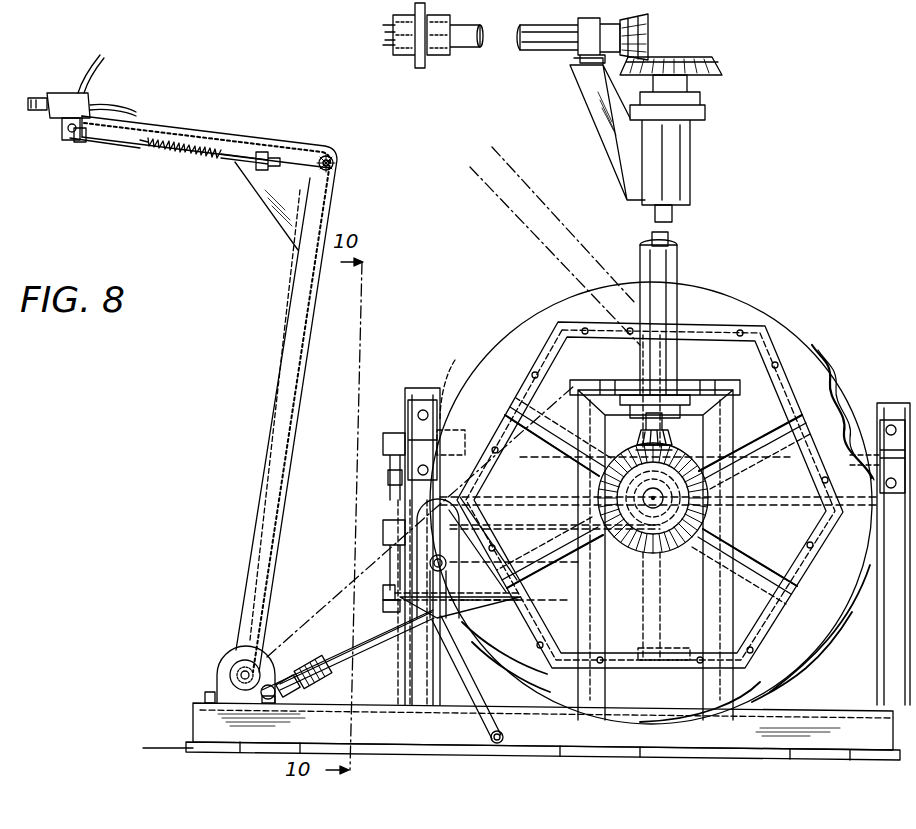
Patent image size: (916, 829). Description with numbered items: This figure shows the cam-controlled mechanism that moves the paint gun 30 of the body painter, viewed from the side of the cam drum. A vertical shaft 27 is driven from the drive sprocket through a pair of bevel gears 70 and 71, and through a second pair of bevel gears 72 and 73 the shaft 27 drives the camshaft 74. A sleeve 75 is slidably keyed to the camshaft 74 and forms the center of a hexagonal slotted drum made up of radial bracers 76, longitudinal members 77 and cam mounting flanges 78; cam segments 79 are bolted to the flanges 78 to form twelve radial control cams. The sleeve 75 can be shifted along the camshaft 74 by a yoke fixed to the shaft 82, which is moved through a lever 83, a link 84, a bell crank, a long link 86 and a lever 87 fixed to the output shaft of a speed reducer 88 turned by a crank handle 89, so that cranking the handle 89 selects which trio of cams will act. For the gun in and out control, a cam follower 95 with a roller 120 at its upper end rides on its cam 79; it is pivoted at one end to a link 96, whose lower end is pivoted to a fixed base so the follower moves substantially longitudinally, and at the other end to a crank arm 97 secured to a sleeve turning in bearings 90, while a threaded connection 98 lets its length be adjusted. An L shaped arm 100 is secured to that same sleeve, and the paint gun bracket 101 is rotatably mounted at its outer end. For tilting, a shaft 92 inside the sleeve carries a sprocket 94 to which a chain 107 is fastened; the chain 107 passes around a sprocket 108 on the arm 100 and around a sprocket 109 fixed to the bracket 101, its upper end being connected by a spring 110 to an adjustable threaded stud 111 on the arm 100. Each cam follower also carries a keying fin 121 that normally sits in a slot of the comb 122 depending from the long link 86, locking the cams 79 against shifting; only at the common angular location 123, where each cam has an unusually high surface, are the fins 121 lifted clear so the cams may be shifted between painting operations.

The paint gun 30 is at (58, 98).
The paint gun bracket 101 is at (62, 127).
The sprocket 109 is at (84, 142).
The spring 110 is at (189, 156).
The adjustable threaded stud 111 is at (237, 163).
The sprocket 108 is at (340, 162).
The L shaped arm 100 is at (283, 399).
The chain 107 is at (285, 437).
The shaft 27 is at (652, 241).
The bevel gear 70 is at (638, 34).
The bevel gear 71 is at (711, 60).
The cam segments 79 is at (520, 324).
The cam mounting flanges 78 is at (709, 332).
The longitudinal members 77 is at (576, 388).
The radial bracers 76 is at (648, 368).
The angular location 123 is at (470, 370).
The shaft 82 is at (456, 436).
The bevel gear 72 is at (668, 440).
The bevel gear 73 is at (690, 459).
The sleeve 75 is at (586, 495).
The camshaft 74 is at (665, 497).
The speed reducer 88 is at (468, 500).
The rollers 120 is at (450, 590).
The lever 83 is at (395, 461).
The link 84 is at (390, 495).
The lever 87 is at (385, 572).
The long link 86 is at (393, 591).
The keying bar or comb 122 is at (400, 610).
The crank handle 89 is at (437, 622).
The link 96 is at (472, 681).
The shaft 92 is at (241, 668).
The sprocket 94 is at (238, 676).
The bearings 90 is at (217, 672).
The crank arm 97 is at (258, 703).
The threaded connection 98 is at (300, 694).
The cam follower 95 is at (378, 648).
The keying fins 121 is at (390, 676).